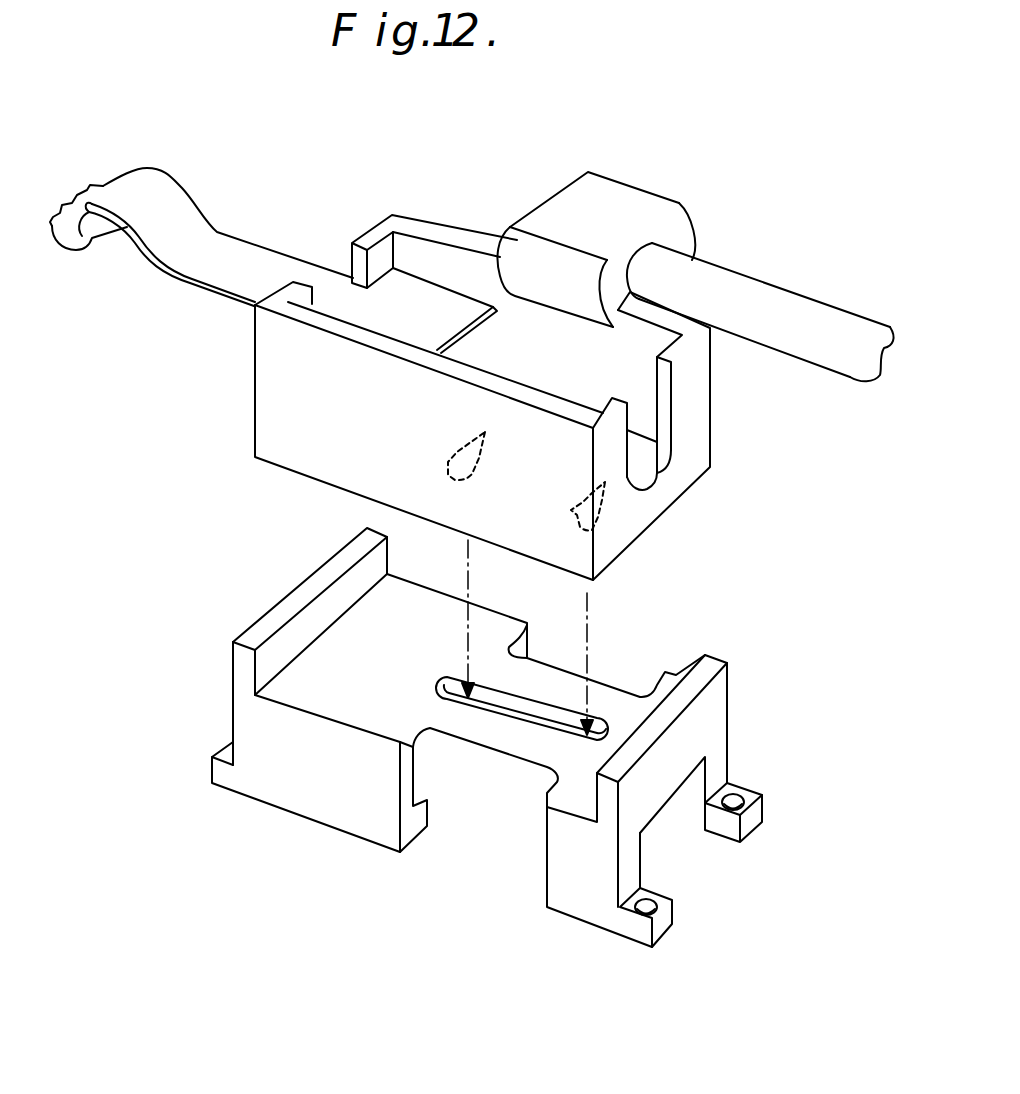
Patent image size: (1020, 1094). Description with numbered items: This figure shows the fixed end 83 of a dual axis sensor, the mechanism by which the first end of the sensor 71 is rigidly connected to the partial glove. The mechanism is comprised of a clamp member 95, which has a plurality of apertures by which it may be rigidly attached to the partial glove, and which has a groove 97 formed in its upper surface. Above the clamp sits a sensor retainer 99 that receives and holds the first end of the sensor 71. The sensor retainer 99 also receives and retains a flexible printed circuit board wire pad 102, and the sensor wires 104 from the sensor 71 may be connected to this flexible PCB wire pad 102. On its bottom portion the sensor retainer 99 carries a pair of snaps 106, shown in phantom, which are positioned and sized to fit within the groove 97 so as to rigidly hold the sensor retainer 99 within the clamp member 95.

The sensor 71 is at (627, 188).
The fixed end 83 is at (183, 602).
The clamp member 95 is at (350, 810).
The groove 97 is at (528, 724).
The sensor retainer 99 is at (363, 475).
The flexible printed circuit board wire pad 102 is at (355, 303).
The sensor wires 104 is at (417, 320).
The snaps 106 is at (453, 480).